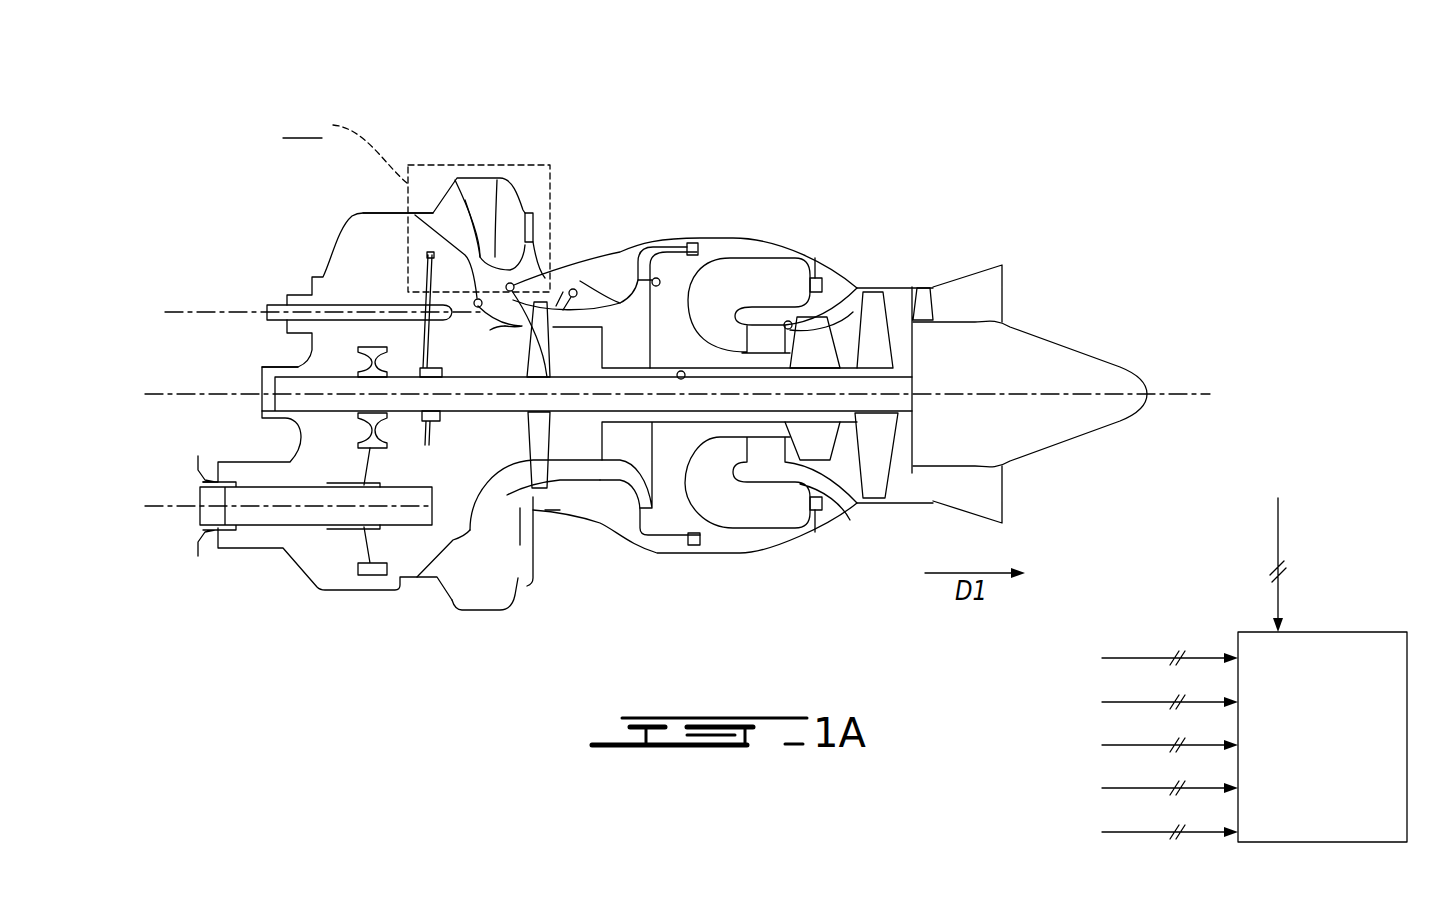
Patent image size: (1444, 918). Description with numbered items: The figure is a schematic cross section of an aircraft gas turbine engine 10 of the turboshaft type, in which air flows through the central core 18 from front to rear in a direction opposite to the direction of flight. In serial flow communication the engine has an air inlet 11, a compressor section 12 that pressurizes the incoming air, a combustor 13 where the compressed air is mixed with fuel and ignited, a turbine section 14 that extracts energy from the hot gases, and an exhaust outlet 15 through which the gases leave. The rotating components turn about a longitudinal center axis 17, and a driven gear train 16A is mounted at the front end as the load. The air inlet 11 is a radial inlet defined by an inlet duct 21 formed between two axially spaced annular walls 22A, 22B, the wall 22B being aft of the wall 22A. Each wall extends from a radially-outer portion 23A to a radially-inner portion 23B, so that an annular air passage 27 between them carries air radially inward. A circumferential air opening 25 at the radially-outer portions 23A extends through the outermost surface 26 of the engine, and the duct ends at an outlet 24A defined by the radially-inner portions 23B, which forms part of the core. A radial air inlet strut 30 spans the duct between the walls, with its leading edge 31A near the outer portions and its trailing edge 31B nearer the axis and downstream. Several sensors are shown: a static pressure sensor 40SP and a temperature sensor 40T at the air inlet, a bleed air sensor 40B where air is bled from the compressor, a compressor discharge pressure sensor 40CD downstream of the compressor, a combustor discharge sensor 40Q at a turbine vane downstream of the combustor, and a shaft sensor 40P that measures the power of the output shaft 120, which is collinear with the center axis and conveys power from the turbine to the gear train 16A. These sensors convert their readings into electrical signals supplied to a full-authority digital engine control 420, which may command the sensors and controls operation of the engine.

The gas turbine engine 10 is at (975, 200).
The air inlet 11 is at (432, 190).
The compressor section 12 is at (588, 519).
The combustor 13 is at (764, 285).
The turbine section 14 is at (803, 453).
The exhaust outlet 15 is at (1010, 294).
The driven gear train 16A is at (257, 515).
The longitudinal center axis 17 is at (1192, 392).
The central core 18 is at (842, 447).
The inlet duct 21 is at (435, 238).
The annular wall 22A is at (440, 260).
The annular wall 22B is at (514, 286).
The radially-outer portion 23A is at (396, 213).
The radially-inner portion 23B is at (295, 366).
The outlet of the inlet duct 24A is at (492, 340).
The air inlet opening 25 is at (495, 255).
The outermost surface 26 is at (528, 212).
The annular air passage 27 is at (450, 322).
The radial air inlet strut 30 is at (451, 298).
The leading edge 31A is at (479, 242).
The trailing edge 31B is at (517, 345).
The static pressure sensor 40SP is at (474, 305).
The temperature sensor 40T is at (573, 289).
The bleed air sensor 40B is at (588, 276).
The compressor discharge pressure sensor 40CD is at (661, 279).
The combustor discharge sensor 40Q is at (789, 321).
The shaft sensor 40P is at (681, 379).
The output shaft 120 is at (722, 400).
The full-authority digital engine control (FADEC) 420 is at (1397, 632).